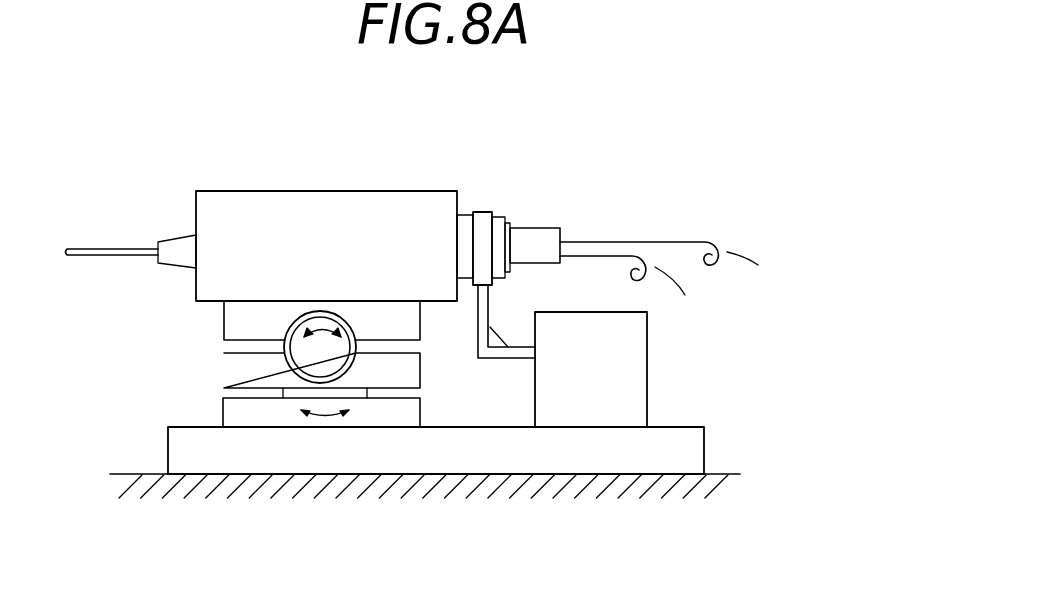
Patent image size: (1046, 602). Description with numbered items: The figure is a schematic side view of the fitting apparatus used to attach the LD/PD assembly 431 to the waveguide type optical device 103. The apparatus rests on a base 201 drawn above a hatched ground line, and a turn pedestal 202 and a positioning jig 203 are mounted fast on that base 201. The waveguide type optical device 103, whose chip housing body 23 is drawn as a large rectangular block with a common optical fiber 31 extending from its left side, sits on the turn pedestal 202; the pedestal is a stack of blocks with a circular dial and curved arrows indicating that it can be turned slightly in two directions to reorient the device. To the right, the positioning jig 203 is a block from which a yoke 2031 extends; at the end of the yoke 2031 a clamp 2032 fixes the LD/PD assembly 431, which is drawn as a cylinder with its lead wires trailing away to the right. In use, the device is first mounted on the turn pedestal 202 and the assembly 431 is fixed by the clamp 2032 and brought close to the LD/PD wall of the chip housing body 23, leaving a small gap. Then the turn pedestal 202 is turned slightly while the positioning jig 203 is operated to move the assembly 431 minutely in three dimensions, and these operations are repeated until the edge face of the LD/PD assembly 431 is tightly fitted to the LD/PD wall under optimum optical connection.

The common optical fiber 31 is at (88, 248).
The waveguide type optical device 103 is at (492, 188).
The chip housing body 23 is at (437, 188).
The clamp 2032 is at (482, 212).
The LD/PD assembly 431 is at (553, 219).
The turn pedestal 202 is at (191, 334).
The yoke 2031 is at (478, 360).
The positioning jig 203 is at (647, 368).
The base 201 is at (704, 452).